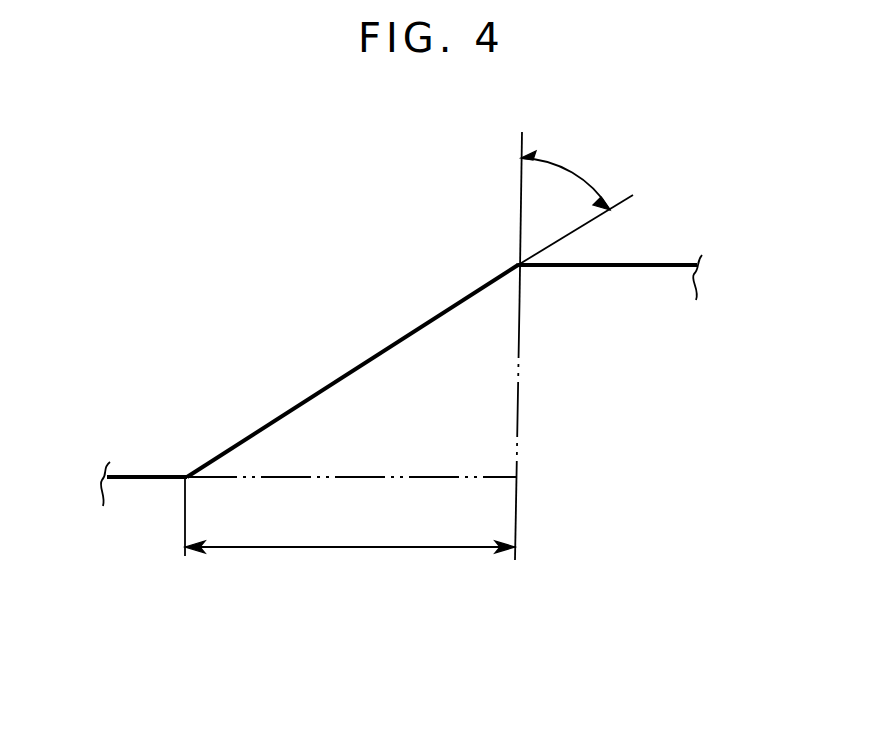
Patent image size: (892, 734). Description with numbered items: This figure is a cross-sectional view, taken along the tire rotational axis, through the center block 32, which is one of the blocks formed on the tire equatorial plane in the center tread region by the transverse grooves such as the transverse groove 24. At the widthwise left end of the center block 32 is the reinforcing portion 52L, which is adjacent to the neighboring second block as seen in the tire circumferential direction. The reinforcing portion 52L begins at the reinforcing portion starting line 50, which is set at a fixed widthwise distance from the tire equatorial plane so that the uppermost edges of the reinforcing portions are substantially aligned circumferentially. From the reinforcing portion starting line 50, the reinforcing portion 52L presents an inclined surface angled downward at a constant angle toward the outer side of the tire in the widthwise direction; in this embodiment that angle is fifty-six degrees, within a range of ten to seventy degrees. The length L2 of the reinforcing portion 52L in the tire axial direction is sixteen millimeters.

The transverse groove 24 is at (145, 477).
The center block 32 is at (654, 265).
The reinforcing portion starting line 50 is at (514, 263).
The reinforcing portion 52L is at (352, 365).
The length L2 is at (336, 548).